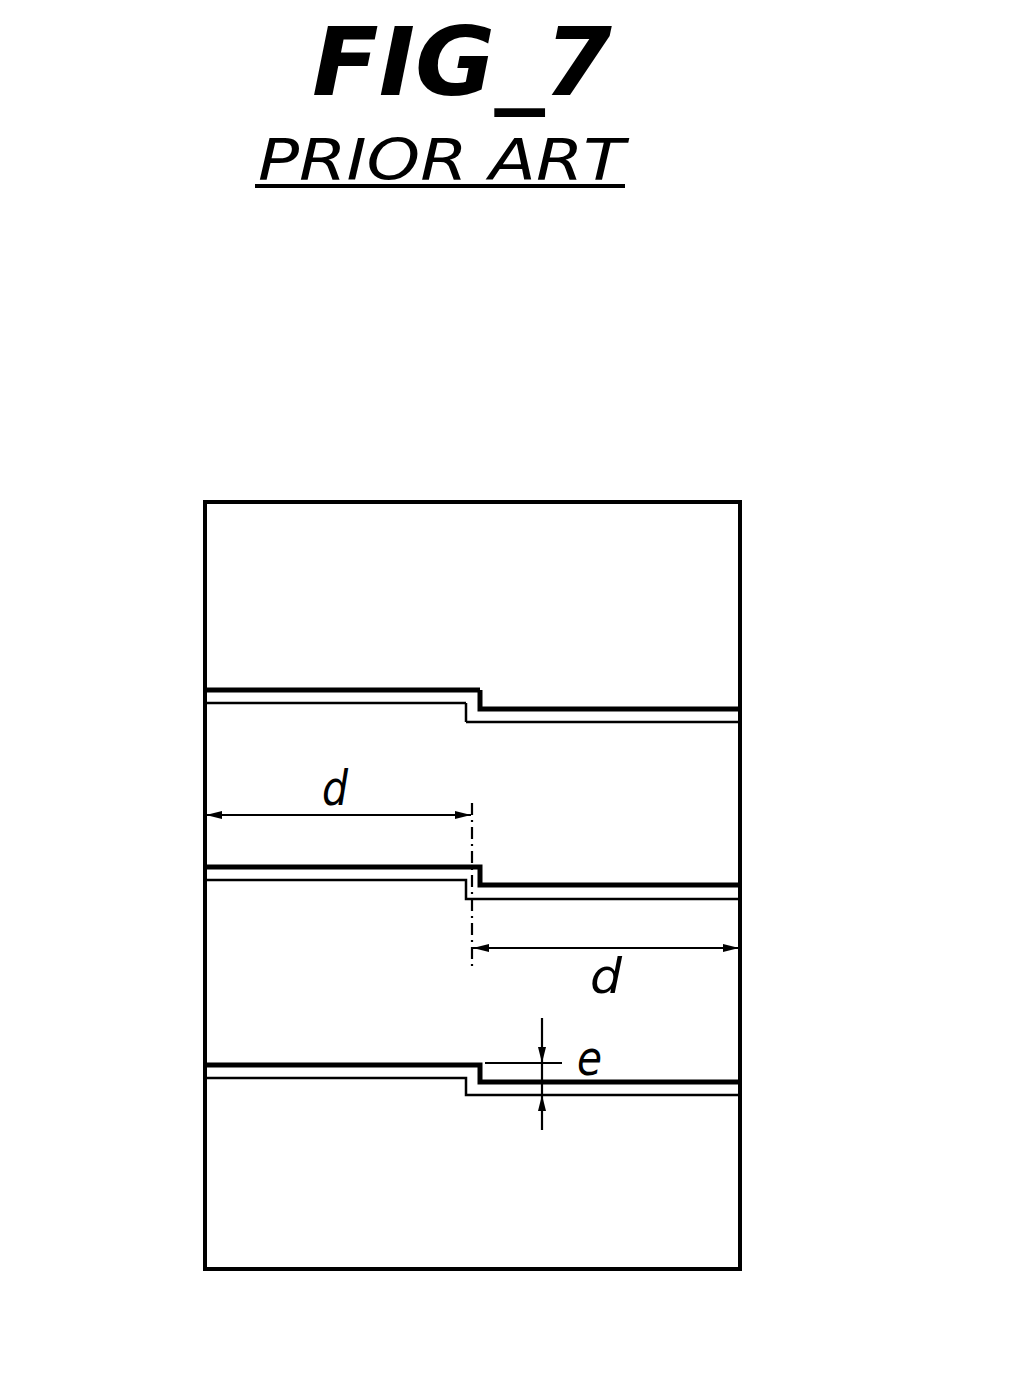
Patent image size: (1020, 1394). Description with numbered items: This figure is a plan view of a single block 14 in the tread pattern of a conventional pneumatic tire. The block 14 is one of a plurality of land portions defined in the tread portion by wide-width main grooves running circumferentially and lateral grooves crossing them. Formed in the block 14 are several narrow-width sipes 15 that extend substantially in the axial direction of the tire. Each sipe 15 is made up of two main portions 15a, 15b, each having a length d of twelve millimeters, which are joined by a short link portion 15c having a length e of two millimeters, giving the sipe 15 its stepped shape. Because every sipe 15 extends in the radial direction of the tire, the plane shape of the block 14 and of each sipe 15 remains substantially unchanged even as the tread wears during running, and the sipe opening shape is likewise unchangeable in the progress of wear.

The block 14 is at (618, 500).
The sipe 15 is at (467, 894).
The main portion 15a is at (259, 688).
The main portion 15b is at (672, 724).
The link portion 15c is at (482, 690).